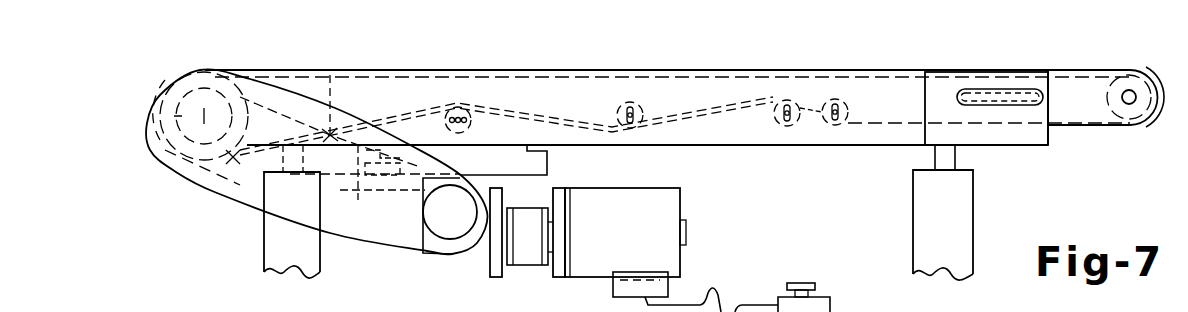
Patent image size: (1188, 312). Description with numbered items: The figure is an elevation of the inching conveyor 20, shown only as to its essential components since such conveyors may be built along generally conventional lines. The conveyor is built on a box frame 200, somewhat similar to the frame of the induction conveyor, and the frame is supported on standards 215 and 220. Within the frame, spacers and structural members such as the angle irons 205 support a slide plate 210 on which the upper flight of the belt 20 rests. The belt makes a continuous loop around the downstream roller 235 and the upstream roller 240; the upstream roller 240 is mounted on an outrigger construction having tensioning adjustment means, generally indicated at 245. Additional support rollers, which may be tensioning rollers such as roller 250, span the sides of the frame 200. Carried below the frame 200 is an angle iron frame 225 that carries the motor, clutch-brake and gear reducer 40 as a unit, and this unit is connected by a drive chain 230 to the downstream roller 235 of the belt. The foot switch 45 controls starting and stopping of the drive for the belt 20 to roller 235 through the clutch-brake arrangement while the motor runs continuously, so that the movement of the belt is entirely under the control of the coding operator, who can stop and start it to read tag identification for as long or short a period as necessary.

The inching conveyor belt 20 is at (748, 70).
The motor, clutch-brake and gear reducer 40 is at (555, 277).
The foot switch 45 is at (810, 288).
The box frame 200 is at (838, 148).
The angle irons 205 is at (645, 80).
The slide plate 210 is at (592, 76).
The standard 215 is at (312, 253).
The standard 220 is at (978, 210).
The angle iron frame 225 is at (556, 166).
The drive chain 230 is at (255, 190).
The downstream roller 235 is at (153, 107).
The upstream roller 240 is at (1153, 77).
The outrigger construction with tensioning adjustment means 245 is at (1057, 141).
The support roller 250 is at (460, 129).